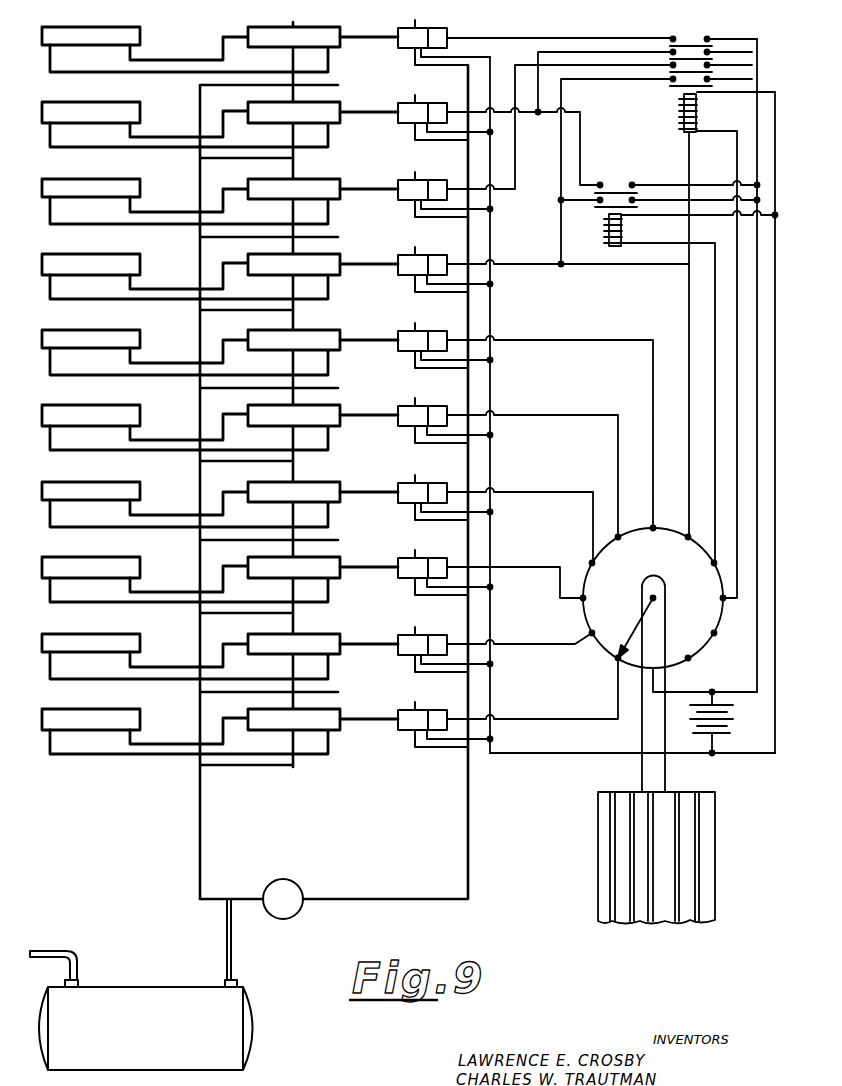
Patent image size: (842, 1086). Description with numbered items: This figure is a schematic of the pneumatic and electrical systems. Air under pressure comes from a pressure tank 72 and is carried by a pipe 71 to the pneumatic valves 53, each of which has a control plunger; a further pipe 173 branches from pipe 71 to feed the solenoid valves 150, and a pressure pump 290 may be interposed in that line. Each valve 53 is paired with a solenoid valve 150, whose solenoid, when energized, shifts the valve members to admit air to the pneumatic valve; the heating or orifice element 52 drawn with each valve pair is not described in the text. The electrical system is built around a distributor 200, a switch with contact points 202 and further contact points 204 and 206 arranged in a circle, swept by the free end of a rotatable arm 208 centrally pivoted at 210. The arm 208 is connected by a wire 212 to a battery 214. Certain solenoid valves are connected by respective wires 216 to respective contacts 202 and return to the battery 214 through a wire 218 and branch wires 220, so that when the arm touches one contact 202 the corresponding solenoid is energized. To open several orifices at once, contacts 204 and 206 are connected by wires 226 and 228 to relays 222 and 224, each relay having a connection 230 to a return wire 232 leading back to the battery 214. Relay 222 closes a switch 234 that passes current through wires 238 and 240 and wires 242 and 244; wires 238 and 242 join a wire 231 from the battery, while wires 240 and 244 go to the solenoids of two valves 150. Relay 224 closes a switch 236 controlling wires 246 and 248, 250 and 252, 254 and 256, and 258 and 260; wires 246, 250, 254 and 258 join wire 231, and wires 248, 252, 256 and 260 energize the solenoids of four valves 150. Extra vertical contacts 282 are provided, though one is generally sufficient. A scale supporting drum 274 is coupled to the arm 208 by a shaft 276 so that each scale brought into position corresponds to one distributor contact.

The heating element 52 is at (50, 47).
The pneumatic valve 53 is at (338, 47).
The pipe 71 is at (203, 839).
The pressure tank 72 is at (156, 993).
The solenoid valve 150 is at (412, 50).
The pipe 173 is at (470, 856).
The distributor 200 is at (716, 658).
The contact points 202 is at (688, 537).
The contact point 204 is at (716, 566).
The contact point 206 is at (721, 600).
The switch arm 208 is at (629, 642).
The pivot 210 is at (650, 596).
The wire 212 is at (665, 685).
The battery 214 is at (742, 762).
The wires 216 is at (530, 268).
The wire 218 is at (527, 757).
The branch wires 220 is at (452, 54).
The relay 222 is at (622, 232).
The relay 224 is at (683, 109).
The wire 226 is at (701, 432).
The wire 228 is at (729, 340).
The relay connection 230 is at (712, 93).
The wire 231 is at (753, 496).
The return wire 232 is at (769, 250).
The switch 234 is at (645, 178).
The switch 236 is at (709, 42).
The wire 238 is at (706, 193).
The wire 240 is at (577, 226).
The wire 242 is at (680, 167).
The wire 244 is at (580, 135).
The wire 246 is at (753, 79).
The wire 248 is at (596, 81).
The wire 250 is at (753, 65).
The wire 252 is at (590, 65).
The wire 254 is at (753, 52).
The wire 256 is at (601, 51).
The wire 258 is at (729, 44).
The wire 260 is at (592, 46).
The scale supporting drum 274 is at (690, 866).
The shaft 276 is at (641, 745).
The vertical contacts 282 is at (737, 620).
The pressure pump 290 is at (288, 880).